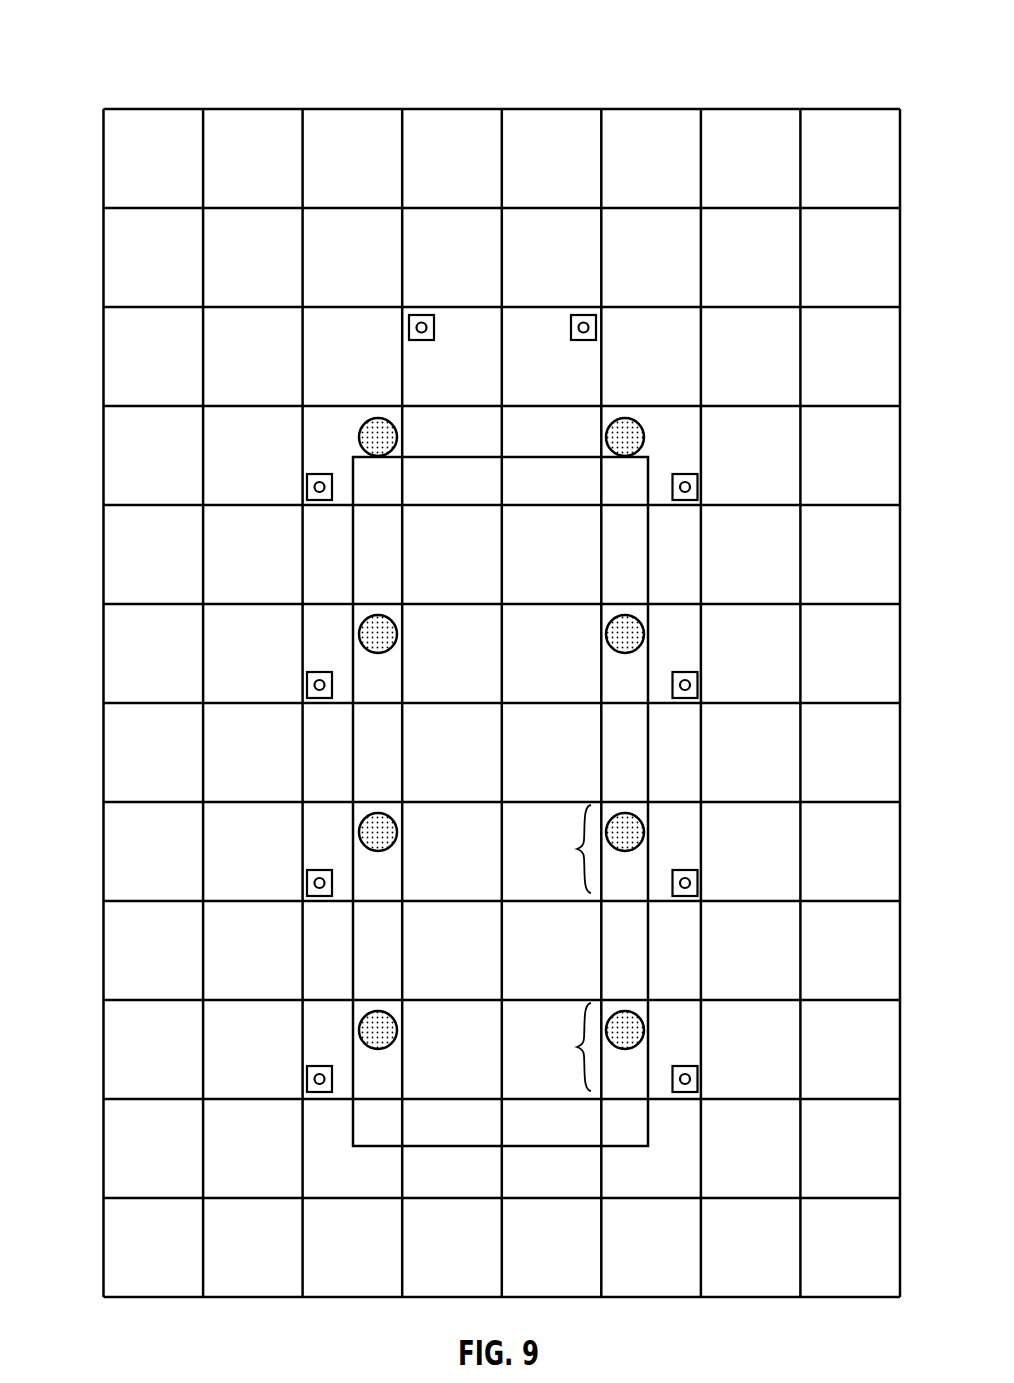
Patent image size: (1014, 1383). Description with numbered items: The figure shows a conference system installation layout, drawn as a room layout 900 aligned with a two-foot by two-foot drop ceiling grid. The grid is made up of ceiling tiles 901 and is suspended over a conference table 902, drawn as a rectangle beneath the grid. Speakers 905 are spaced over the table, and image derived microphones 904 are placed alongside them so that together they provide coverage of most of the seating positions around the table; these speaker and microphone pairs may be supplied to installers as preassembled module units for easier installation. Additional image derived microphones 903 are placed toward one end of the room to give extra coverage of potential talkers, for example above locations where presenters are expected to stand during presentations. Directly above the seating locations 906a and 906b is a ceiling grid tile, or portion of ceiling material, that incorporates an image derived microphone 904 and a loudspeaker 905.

The room layout 900 is at (113, 28).
The tiles 901 is at (126, 164).
The conference table 902 is at (352, 580).
The image derived microphones 903 is at (421, 314).
The image derived microphones 904 is at (306, 487).
The speakers 905 is at (641, 830).
The seating location 906a is at (551, 1047).
The seating location 906b is at (551, 849).